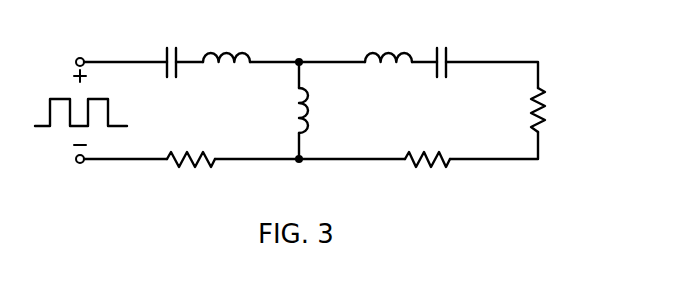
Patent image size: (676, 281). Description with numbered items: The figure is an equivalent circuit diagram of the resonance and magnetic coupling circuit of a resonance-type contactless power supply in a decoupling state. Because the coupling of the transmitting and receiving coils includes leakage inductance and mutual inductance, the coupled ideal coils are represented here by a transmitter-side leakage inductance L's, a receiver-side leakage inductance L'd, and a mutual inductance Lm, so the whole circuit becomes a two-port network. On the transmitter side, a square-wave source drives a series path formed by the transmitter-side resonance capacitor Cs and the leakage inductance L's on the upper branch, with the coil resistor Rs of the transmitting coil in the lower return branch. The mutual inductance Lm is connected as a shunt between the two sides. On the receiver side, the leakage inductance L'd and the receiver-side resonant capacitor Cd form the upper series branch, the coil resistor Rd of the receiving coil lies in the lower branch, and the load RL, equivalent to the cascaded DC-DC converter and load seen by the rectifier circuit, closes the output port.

The transmitter-side resonance capacitor Cs is at (169, 50).
The transmitter-side leakage inductance L's is at (226, 41).
The mutual inductance Lm is at (283, 110).
The receiver-side leakage inductance L'd is at (388, 42).
The receiver-side resonant capacitor Cd is at (437, 50).
The load RL is at (558, 110).
The coil resistor Rs is at (191, 146).
The coil resistor Rd is at (427, 146).